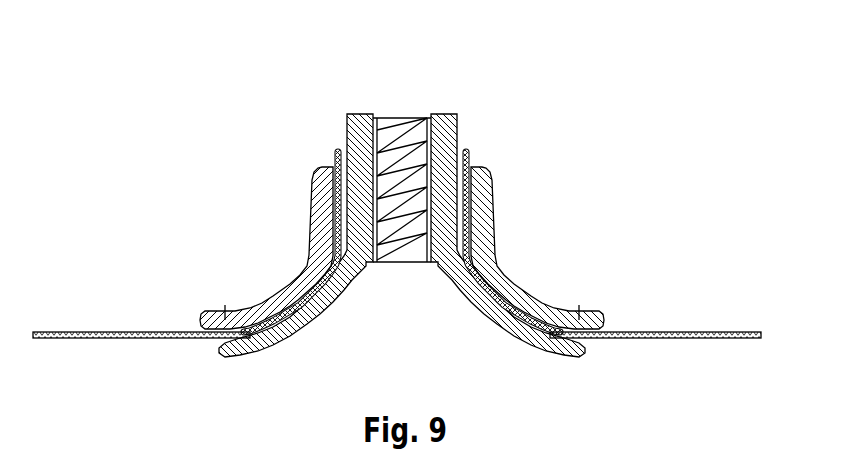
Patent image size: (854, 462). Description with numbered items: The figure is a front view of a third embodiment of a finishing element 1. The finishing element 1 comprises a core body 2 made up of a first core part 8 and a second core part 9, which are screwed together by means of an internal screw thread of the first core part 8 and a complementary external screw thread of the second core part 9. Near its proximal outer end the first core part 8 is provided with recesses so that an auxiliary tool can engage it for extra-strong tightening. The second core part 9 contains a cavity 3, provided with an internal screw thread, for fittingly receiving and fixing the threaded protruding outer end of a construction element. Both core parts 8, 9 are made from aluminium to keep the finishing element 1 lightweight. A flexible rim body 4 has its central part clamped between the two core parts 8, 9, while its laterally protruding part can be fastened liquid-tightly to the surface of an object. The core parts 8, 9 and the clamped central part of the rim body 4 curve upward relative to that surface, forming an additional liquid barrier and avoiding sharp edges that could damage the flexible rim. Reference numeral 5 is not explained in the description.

The finishing element 1 is at (216, 117).
The core body 2 is at (471, 160).
The cavity 3 is at (393, 122).
The flexible rim body 4 is at (659, 333).
The sleeve 5 is at (459, 117).
The first core part 8 is at (496, 227).
The second core part 9 is at (346, 124).